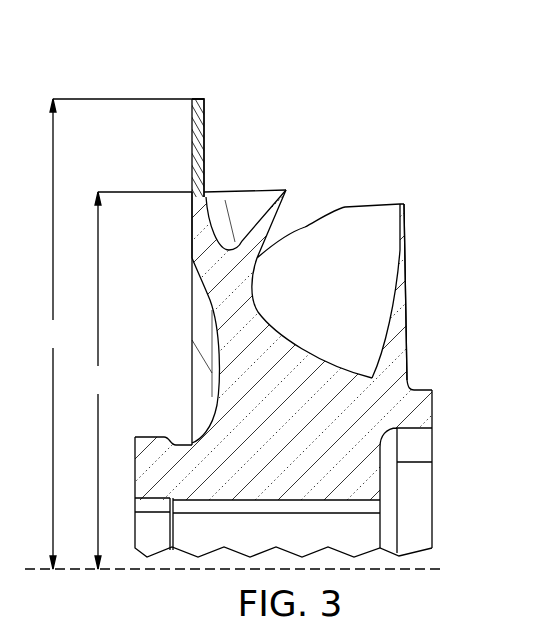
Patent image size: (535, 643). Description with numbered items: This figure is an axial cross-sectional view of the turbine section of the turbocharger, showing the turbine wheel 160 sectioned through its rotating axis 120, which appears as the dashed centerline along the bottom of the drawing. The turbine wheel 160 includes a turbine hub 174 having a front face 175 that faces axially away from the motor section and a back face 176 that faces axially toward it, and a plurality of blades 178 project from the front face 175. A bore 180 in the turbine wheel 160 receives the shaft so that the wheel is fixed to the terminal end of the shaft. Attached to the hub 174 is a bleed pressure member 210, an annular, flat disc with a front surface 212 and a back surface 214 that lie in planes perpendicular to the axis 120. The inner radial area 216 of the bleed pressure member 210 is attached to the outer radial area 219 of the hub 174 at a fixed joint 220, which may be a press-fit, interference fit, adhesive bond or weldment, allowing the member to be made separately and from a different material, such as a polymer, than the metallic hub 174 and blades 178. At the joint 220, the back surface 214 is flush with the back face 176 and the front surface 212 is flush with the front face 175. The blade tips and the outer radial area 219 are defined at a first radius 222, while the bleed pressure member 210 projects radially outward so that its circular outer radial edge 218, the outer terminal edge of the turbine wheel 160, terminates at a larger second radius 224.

The axis 120 is at (163, 571).
The turbine wheel 160 is at (355, 248).
The turbine hub 174 is at (292, 457).
The front face 175 is at (278, 330).
The back face 176 is at (195, 312).
The blades 178 is at (410, 300).
The bore 180 is at (277, 511).
The bleed pressure member 210 is at (225, 103).
The front surface 212 is at (206, 133).
The back surface 214 is at (188, 130).
The inner radial area 216 is at (193, 207).
The outer radial edge 218 is at (192, 98).
The outer radial area 219 is at (199, 192).
The fixed joint 220 is at (209, 200).
The first radius 222 is at (134, 380).
The second radius 224 is at (111, 334).